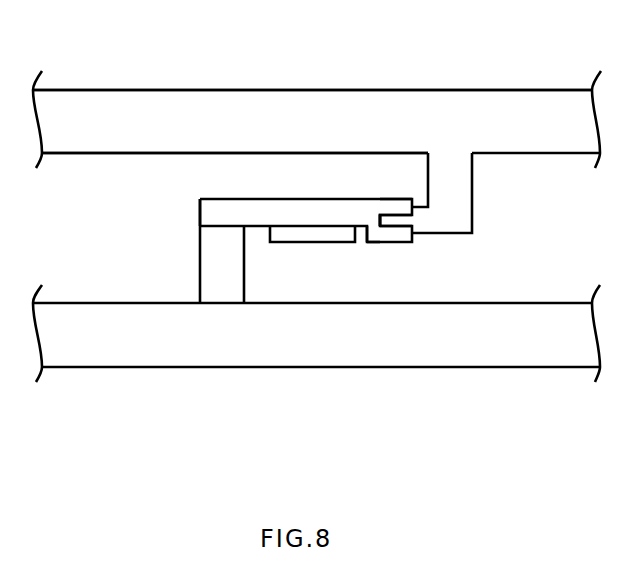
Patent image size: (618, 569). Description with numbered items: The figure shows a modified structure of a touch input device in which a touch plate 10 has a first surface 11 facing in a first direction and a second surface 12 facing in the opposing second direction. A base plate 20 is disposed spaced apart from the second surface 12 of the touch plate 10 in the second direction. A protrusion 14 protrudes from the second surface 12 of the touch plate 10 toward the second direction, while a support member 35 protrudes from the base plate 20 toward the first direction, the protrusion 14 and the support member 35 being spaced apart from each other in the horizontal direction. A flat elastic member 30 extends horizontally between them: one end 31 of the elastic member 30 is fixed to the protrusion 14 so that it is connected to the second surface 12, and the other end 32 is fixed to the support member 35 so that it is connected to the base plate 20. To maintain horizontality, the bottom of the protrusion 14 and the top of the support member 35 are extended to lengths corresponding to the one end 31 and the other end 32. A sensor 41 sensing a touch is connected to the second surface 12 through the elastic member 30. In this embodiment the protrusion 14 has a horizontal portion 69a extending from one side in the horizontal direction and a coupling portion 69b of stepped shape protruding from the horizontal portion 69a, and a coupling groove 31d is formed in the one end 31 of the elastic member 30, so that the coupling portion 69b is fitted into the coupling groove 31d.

The touch plate 10 is at (352, 105).
The first surface 11 is at (514, 90).
The second surface 12 is at (83, 155).
The protrusion 14 is at (466, 183).
The base plate 20 is at (306, 365).
The elastic member 30 is at (303, 205).
The one end of the elastic member 31 is at (398, 205).
The coupling groove 31d is at (378, 228).
The other end of the elastic member 32 is at (205, 212).
The support member 35 is at (205, 258).
The sensor 41 is at (305, 236).
The horizontal portion 69a is at (424, 226).
The coupling portion 69b is at (399, 221).